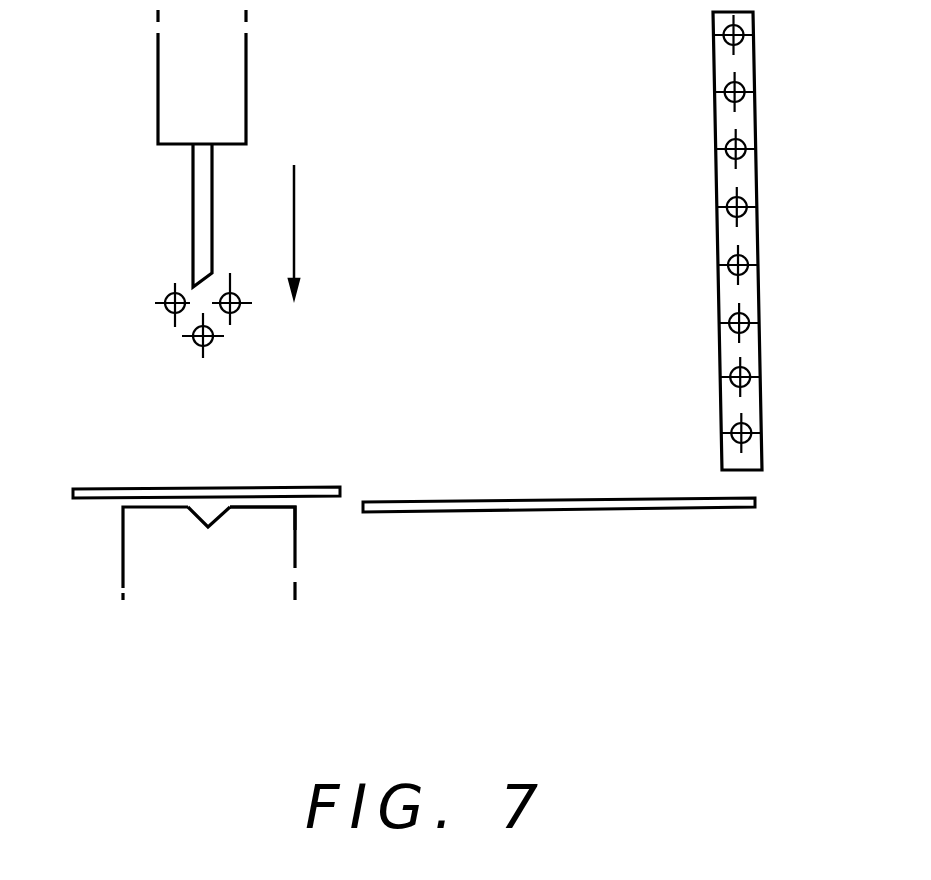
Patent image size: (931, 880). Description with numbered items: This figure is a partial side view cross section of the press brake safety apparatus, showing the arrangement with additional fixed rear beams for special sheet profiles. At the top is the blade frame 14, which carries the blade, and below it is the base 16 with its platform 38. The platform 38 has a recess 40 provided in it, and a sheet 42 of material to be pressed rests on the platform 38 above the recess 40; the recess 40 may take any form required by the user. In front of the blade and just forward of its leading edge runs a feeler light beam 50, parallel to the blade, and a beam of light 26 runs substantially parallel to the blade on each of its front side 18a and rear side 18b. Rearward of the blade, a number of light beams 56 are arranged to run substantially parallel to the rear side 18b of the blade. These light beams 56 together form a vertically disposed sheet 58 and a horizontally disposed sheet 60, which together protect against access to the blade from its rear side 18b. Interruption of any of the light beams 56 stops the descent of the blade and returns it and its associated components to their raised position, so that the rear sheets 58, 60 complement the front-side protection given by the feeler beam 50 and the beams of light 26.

The blade frame 14 is at (246, 55).
The base 16 is at (122, 542).
The front side 18a is at (85, 101).
The rear side 18b is at (388, 99).
The beam of light 26 is at (162, 302).
The platform 38 is at (243, 498).
The recess 40 is at (202, 520).
The sheet 42 is at (90, 488).
The feeler light beam 50 is at (213, 345).
The light beams 56 is at (745, 40).
The vertically disposed sheet 58 is at (755, 171).
The horizontally disposed sheet 60 is at (578, 506).